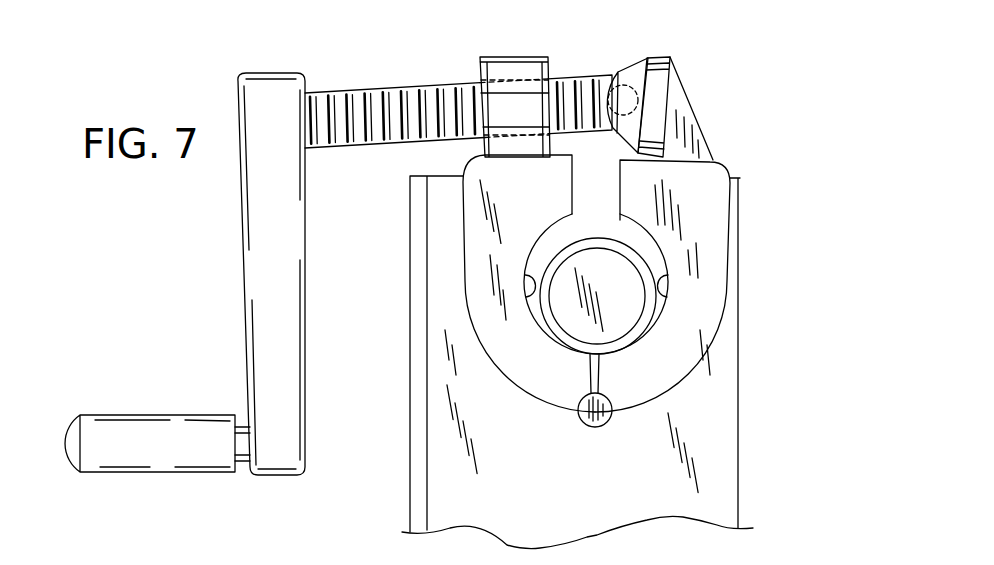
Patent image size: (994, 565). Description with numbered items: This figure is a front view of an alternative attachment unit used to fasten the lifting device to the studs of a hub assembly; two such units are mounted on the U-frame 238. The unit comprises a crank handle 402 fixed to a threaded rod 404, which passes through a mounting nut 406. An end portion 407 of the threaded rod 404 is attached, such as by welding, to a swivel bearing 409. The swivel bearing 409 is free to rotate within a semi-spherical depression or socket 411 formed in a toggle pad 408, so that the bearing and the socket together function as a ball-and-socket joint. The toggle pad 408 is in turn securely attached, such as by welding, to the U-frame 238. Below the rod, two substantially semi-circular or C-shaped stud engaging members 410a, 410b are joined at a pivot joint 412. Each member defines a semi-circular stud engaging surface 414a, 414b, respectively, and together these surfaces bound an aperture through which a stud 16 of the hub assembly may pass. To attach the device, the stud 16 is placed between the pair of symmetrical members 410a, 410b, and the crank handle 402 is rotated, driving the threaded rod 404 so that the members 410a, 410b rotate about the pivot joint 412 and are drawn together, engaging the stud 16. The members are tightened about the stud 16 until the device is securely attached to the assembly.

The crank handle 402 is at (282, 478).
The threaded rod 404 is at (348, 88).
The mounting nut 406 is at (522, 57).
The end portion of threaded rod 407 is at (612, 80).
The toggle pad 408 is at (662, 57).
The swivel bearing 409 is at (613, 85).
The socket 411 is at (650, 78).
The stud engaging member 410a is at (463, 213).
The stud engaging member 410b is at (732, 212).
The stud engaging surface 414a is at (527, 287).
The stud engaging surface 414b is at (672, 275).
The stud 16 is at (620, 313).
The pivot joint 412 is at (593, 427).
The U-frame 238 is at (727, 450).